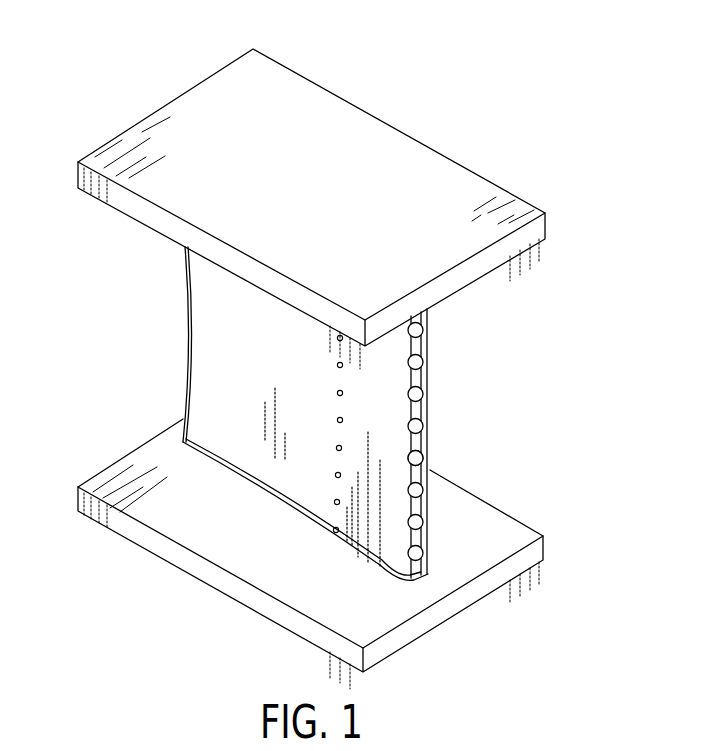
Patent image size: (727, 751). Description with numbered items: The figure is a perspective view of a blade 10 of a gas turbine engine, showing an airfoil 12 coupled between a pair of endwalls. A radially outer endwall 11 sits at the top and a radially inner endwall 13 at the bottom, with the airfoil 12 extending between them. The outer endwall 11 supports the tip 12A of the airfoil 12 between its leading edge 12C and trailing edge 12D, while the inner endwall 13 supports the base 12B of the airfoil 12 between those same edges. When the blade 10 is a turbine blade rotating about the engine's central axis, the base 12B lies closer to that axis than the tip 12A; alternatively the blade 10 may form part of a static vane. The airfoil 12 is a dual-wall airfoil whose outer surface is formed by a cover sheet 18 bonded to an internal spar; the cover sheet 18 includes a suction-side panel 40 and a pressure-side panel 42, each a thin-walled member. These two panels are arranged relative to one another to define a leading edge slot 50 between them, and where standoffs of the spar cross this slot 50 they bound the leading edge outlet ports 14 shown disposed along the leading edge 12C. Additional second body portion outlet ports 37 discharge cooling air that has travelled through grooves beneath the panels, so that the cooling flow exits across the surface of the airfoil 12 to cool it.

The blade 10 is at (313, 355).
The radially outer endwall 11 is at (335, 113).
The airfoil 12 is at (332, 431).
The tip 12A is at (248, 310).
The base 12B is at (305, 527).
The leading edge 12C is at (470, 434).
The trailing edge 12D is at (185, 292).
The radially inner endwall 13 is at (170, 572).
The leading edge outlet ports 14 is at (420, 457).
The cover sheet 18 is at (250, 478).
The second body portion outlet ports 37 is at (336, 364).
The suction-side panel 40 is at (449, 443).
The pressure-side panel 42 is at (300, 497).
The leading edge slot 50 is at (422, 425).